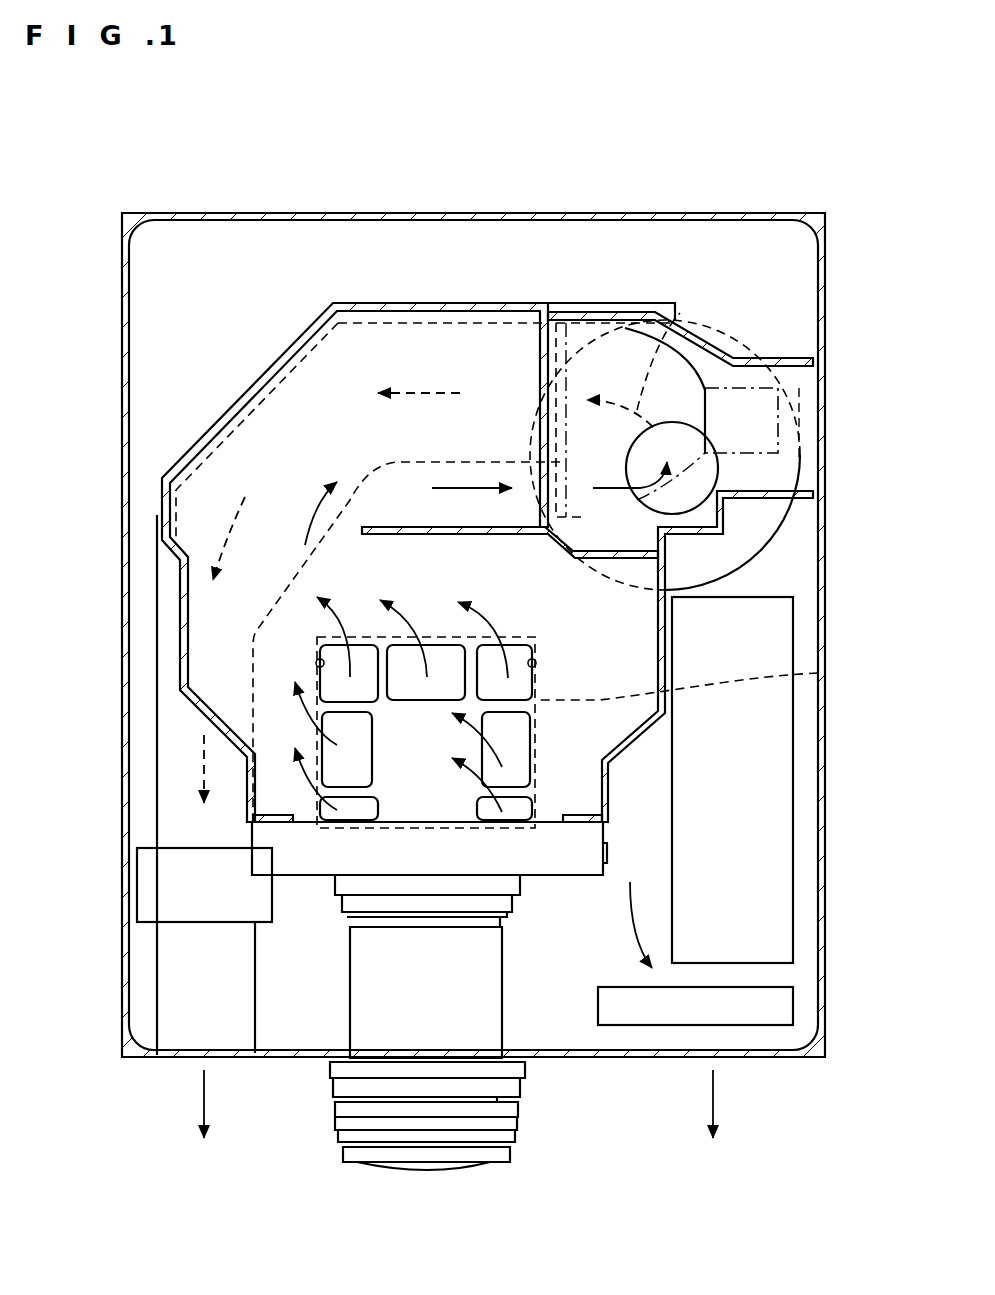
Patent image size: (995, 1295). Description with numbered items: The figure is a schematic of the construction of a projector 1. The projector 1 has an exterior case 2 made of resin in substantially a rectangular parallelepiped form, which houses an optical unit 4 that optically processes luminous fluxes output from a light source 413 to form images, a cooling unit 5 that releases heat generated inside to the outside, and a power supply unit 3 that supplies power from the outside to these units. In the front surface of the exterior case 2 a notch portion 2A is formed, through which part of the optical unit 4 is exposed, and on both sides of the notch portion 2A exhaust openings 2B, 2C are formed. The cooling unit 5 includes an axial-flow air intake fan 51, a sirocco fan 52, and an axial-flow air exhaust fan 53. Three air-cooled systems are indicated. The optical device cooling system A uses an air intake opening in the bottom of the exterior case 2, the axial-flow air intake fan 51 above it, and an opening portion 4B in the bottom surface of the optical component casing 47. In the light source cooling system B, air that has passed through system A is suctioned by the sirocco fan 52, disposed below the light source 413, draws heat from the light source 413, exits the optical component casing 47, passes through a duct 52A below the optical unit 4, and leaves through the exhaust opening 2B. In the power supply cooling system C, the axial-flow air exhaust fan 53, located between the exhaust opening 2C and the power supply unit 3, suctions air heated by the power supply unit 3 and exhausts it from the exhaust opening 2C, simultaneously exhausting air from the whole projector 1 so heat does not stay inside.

The projector 1 is at (492, 183).
The exterior case 2 is at (826, 262).
The notch portion 2A is at (340, 1045).
The exhaust opening 2B is at (165, 1060).
The exhaust opening 2C is at (773, 1060).
The power supply unit 3 is at (790, 892).
The optical unit 4 is at (207, 435).
The opening portion 4B is at (320, 663).
The optical component casing 47 is at (438, 302).
The light source 413 is at (748, 390).
The cooling unit 5 is at (866, 590).
The axial-flow air intake fan 51 is at (818, 673).
The sirocco fan 52 is at (773, 548).
The duct 52A is at (157, 753).
The axial-flow air exhaust fan 53 is at (698, 997).
The optical device cooling system A is at (482, 560).
The light source cooling system B is at (693, 322).
The power supply cooling system C is at (630, 920).